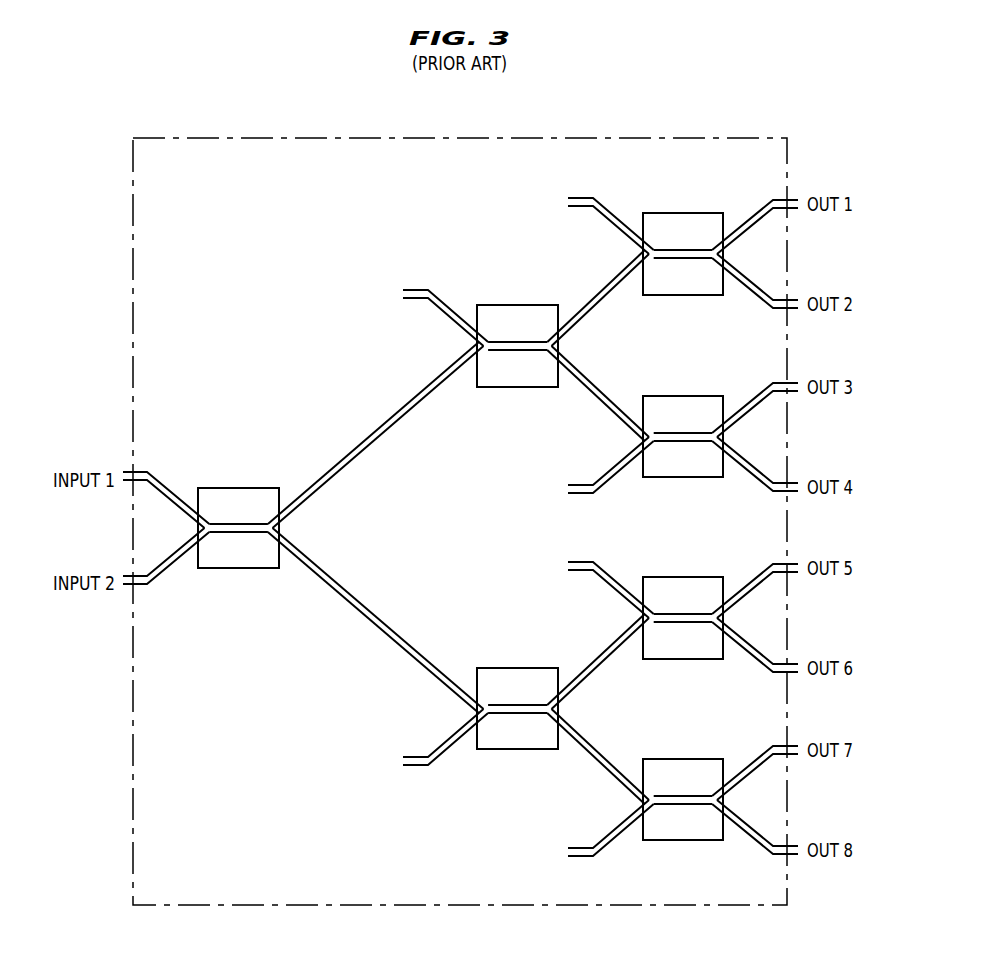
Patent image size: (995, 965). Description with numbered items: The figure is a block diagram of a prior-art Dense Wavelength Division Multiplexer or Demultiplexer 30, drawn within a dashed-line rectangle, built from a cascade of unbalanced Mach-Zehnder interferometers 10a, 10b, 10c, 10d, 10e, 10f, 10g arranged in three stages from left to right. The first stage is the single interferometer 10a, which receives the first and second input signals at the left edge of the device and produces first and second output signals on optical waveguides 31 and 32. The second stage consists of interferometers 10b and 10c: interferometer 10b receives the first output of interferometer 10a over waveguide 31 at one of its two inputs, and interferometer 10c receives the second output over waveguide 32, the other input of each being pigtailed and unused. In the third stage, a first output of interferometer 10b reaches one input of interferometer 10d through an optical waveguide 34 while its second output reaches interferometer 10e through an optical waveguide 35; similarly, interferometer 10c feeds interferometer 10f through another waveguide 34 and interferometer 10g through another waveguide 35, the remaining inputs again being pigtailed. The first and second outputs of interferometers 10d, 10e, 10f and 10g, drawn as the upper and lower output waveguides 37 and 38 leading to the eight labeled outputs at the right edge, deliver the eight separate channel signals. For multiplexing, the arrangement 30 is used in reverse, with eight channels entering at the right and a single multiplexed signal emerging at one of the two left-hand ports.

The Dense Wavelength Division Multiplexer/Demultiplexer 30 is at (318, 138).
The Mach-Zehnder interferometer 10a is at (250, 488).
The Mach-Zehnder interferometer 10b is at (497, 305).
The Mach-Zehnder interferometer 10c is at (497, 668).
The Mach-Zehnder interferometer 10d is at (665, 213).
The Mach-Zehnder interferometer 10e is at (665, 396).
The Mach-Zehnder interferometer 10f is at (665, 577).
The Mach-Zehnder interferometer 10g is at (665, 759).
The optical waveguide 31 is at (385, 422).
The optical waveguide 32 is at (388, 636).
The optical waveguide 34 is at (605, 288).
The optical waveguide 35 is at (608, 406).
The upper output waveguide 37 is at (759, 211).
The lower output waveguide 38 is at (763, 300).